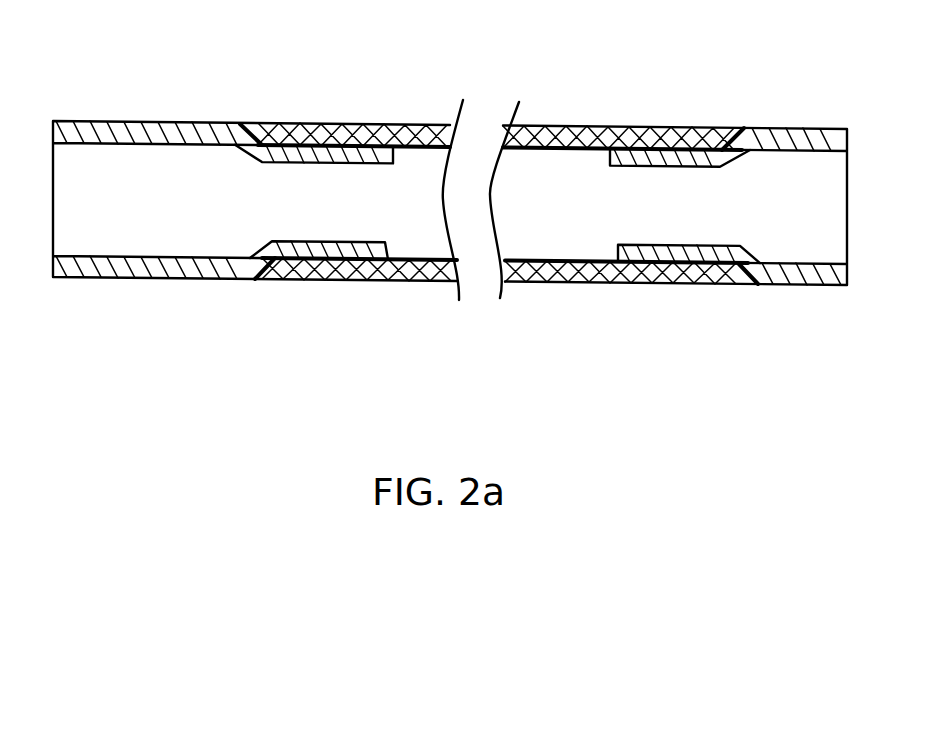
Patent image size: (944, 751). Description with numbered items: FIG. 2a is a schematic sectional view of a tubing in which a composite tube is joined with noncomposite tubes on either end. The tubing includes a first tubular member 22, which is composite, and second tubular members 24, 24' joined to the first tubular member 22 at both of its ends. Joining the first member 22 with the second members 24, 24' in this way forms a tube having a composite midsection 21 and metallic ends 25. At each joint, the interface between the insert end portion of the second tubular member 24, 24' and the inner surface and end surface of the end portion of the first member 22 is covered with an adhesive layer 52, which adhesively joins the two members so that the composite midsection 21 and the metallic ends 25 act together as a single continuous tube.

The composite midsection 21 is at (533, 127).
The first tubular member 22 is at (370, 125).
The second tubular member 24 is at (791, 75).
The second tubular member 24' is at (146, 72).
The metallic ends 25 is at (135, 278).
The adhesive layer 52 is at (302, 125).